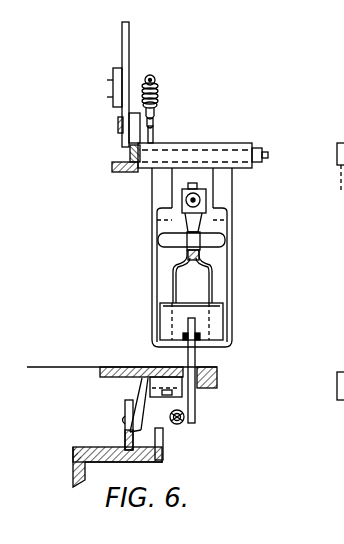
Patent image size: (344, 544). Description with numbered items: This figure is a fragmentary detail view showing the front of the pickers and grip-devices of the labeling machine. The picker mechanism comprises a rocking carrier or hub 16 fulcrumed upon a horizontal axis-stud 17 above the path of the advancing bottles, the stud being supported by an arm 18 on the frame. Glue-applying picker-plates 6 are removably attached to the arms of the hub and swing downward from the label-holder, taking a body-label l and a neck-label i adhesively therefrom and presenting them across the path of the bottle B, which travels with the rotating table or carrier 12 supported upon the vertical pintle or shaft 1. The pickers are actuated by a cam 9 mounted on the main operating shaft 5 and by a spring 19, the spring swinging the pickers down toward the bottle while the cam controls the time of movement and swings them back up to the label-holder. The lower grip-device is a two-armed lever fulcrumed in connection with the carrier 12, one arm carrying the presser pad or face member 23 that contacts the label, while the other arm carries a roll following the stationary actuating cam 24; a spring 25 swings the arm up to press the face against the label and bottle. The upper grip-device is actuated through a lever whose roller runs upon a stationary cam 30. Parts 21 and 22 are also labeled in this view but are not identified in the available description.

The vertical pintle or shaft 1 is at (36, 352).
The main operating shaft 5 is at (105, 88).
The glue-applying picker-plates 6 is at (157, 289).
The cam 9 is at (127, 63).
The rotating table or carrier 12 is at (217, 377).
The rocking carrier or hub 16 is at (198, 144).
The horizontal axis-stud 17 is at (268, 155).
The arm on the frame 18 is at (116, 172).
The spring 19 is at (160, 95).
The clamp 21 is at (183, 231).
The rod 22 is at (195, 385).
The presser pad or face member 23 is at (192, 323).
The stationary actuating cam 24 is at (125, 446).
The spring 25 is at (182, 423).
The stationary cam 30 is at (160, 460).
The bottle B is at (192, 276).
The neck-label i is at (215, 240).
The body-label l is at (183, 312).